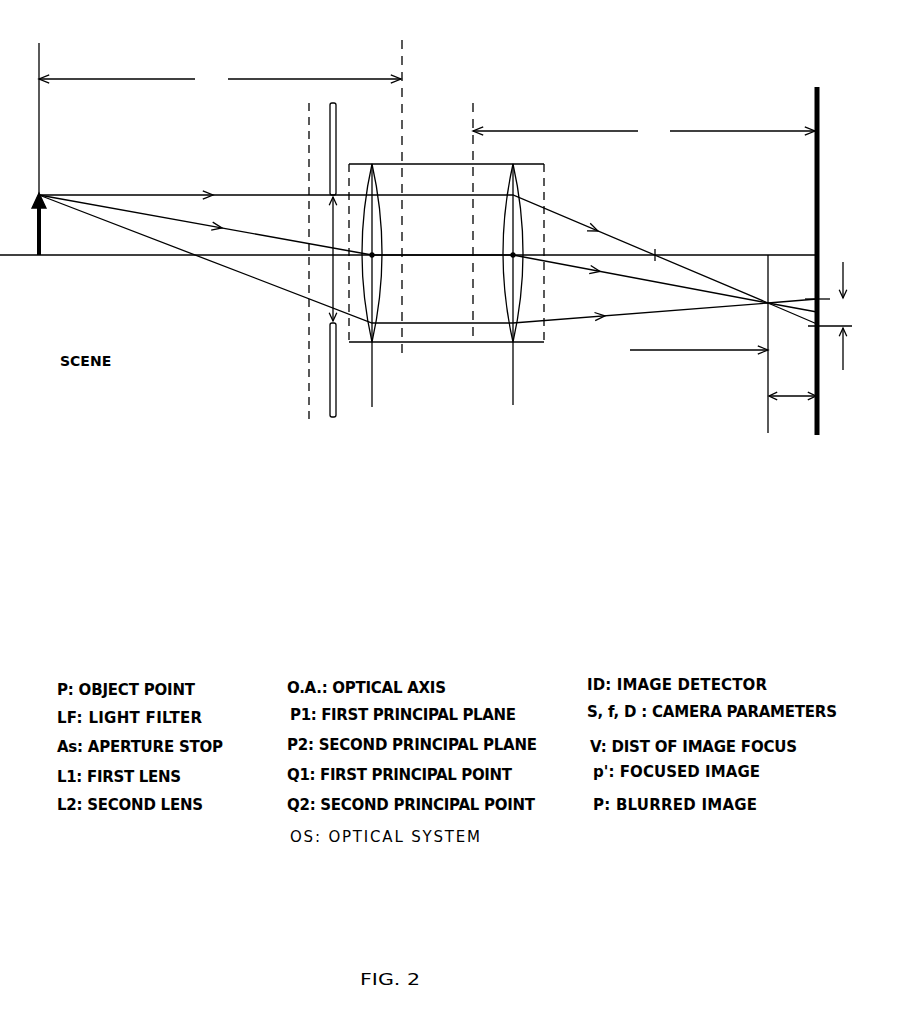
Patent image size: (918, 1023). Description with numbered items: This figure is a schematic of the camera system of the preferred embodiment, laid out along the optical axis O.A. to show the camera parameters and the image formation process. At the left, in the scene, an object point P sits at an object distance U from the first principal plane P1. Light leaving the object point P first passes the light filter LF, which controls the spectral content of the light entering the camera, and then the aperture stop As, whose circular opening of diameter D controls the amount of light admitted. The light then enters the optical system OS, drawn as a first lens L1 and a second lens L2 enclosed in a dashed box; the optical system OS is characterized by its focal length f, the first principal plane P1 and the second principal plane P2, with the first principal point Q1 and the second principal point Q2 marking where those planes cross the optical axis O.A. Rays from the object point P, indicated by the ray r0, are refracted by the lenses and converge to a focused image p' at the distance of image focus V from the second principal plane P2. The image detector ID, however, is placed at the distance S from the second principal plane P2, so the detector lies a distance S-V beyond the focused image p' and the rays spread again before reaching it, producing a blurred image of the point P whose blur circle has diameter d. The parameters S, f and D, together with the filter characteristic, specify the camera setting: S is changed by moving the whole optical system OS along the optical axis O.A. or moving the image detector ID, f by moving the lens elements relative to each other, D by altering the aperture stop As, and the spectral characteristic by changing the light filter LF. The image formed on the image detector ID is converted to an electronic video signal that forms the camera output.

The object point P is at (33, 149).
The light filter LF is at (314, 392).
The aperture stop As is at (338, 392).
The first lens L1 is at (369, 277).
The second lens L2 is at (511, 276).
The optical axis O.A. is at (408, 265).
The first principal plane P1 is at (401, 185).
The second principal plane P2 is at (473, 208).
The first principal point Q1 is at (381, 265).
The second principal point Q2 is at (505, 265).
The optical system OS is at (420, 164).
The image detector ID is at (814, 250).
The distance between second principal plane and image detector S is at (644, 132).
The focal length f is at (428, 257).
The diameter of the camera aperture D is at (331, 259).
The distance of image focus V is at (689, 352).
The focused image p' is at (757, 344).
The object distance U is at (220, 81).
The ray r0 is at (230, 167).
The defocus distance S-V is at (792, 409).
The blur circle diameter d is at (837, 334).